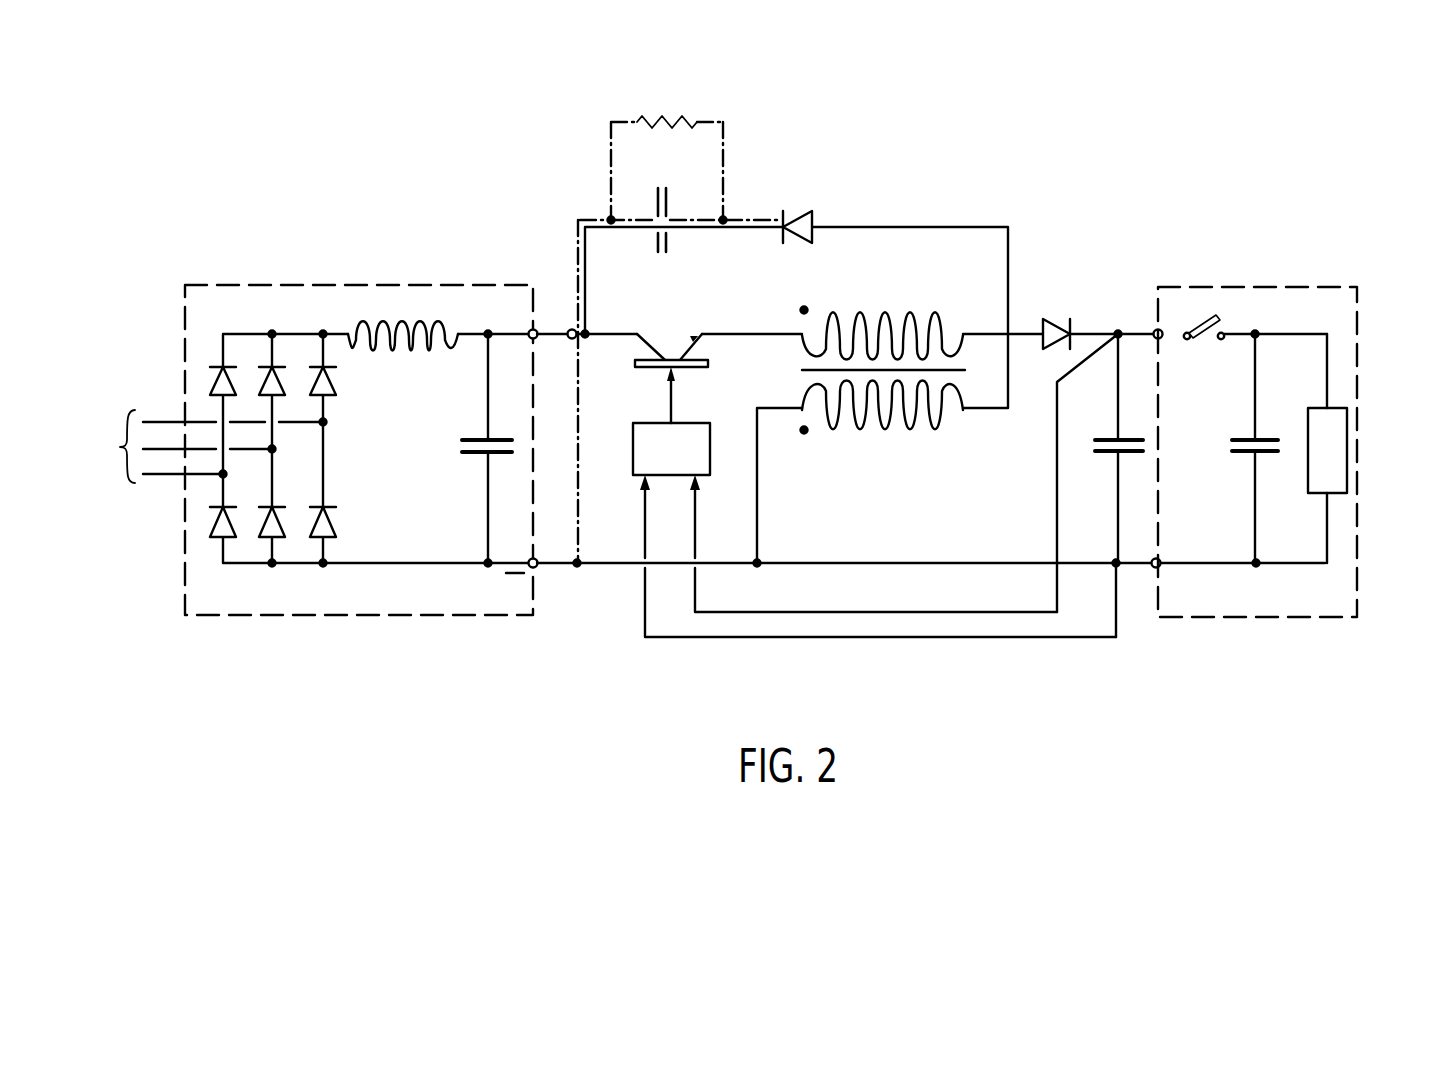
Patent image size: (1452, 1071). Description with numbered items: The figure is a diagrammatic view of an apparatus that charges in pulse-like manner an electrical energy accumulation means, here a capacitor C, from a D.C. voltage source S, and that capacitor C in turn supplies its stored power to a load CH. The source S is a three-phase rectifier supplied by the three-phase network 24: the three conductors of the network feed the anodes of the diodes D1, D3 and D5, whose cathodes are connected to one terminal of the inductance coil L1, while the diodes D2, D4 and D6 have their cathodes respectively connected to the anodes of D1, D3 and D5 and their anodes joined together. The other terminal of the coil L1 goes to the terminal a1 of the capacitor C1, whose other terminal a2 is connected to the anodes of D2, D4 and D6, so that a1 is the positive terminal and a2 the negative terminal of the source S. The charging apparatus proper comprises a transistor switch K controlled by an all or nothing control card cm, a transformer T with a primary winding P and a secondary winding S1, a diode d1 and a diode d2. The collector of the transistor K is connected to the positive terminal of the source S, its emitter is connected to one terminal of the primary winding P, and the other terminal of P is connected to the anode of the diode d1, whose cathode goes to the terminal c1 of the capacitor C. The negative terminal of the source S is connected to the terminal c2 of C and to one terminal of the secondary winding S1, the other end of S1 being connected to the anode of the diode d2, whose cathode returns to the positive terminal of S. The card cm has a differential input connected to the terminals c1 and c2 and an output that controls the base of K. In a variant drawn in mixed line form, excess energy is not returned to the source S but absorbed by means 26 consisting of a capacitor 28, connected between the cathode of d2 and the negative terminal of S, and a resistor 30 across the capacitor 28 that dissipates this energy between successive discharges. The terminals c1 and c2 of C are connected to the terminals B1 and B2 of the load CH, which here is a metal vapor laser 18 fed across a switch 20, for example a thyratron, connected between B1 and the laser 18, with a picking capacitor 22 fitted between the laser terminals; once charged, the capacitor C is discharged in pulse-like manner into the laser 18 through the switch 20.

The D.C. voltage or power source S is at (307, 615).
The diode D1 is at (213, 380).
The diode D2 is at (210, 522).
The diode D3 is at (265, 378).
The diode D4 is at (260, 528).
The diode D5 is at (330, 377).
The diode D6 is at (330, 518).
The three-phase network 24 is at (204, 446).
The inductance coil L1 is at (388, 327).
The capacitor C1 is at (466, 455).
The terminal of the capacitor C1 a1 is at (487, 333).
The terminal of the capacitor C1 a2 is at (487, 568).
The energy absorbing means 26 is at (730, 157).
The resistor 30 is at (655, 117).
The capacitor 28 is at (656, 195).
The diode d2 is at (807, 216).
The switch (transistor) K is at (670, 355).
The all or nothing control card cm is at (637, 467).
The transformer T is at (912, 443).
The primary winding P is at (933, 317).
The secondary winding S1 is at (857, 433).
The diode d1 is at (1058, 324).
The terminal of the capacitor C c1 is at (1112, 343).
The terminal of the capacitor C c2 is at (1120, 567).
The electrical energy accumulation means (capacitor) C is at (1105, 453).
The terminal of the load B1 is at (1154, 329).
The terminal of the load B2 is at (1158, 568).
The load CH is at (1260, 620).
The switch 20 is at (1202, 317).
The picking capacitor 22 is at (1247, 458).
The metal vapor laser 18 is at (1313, 458).